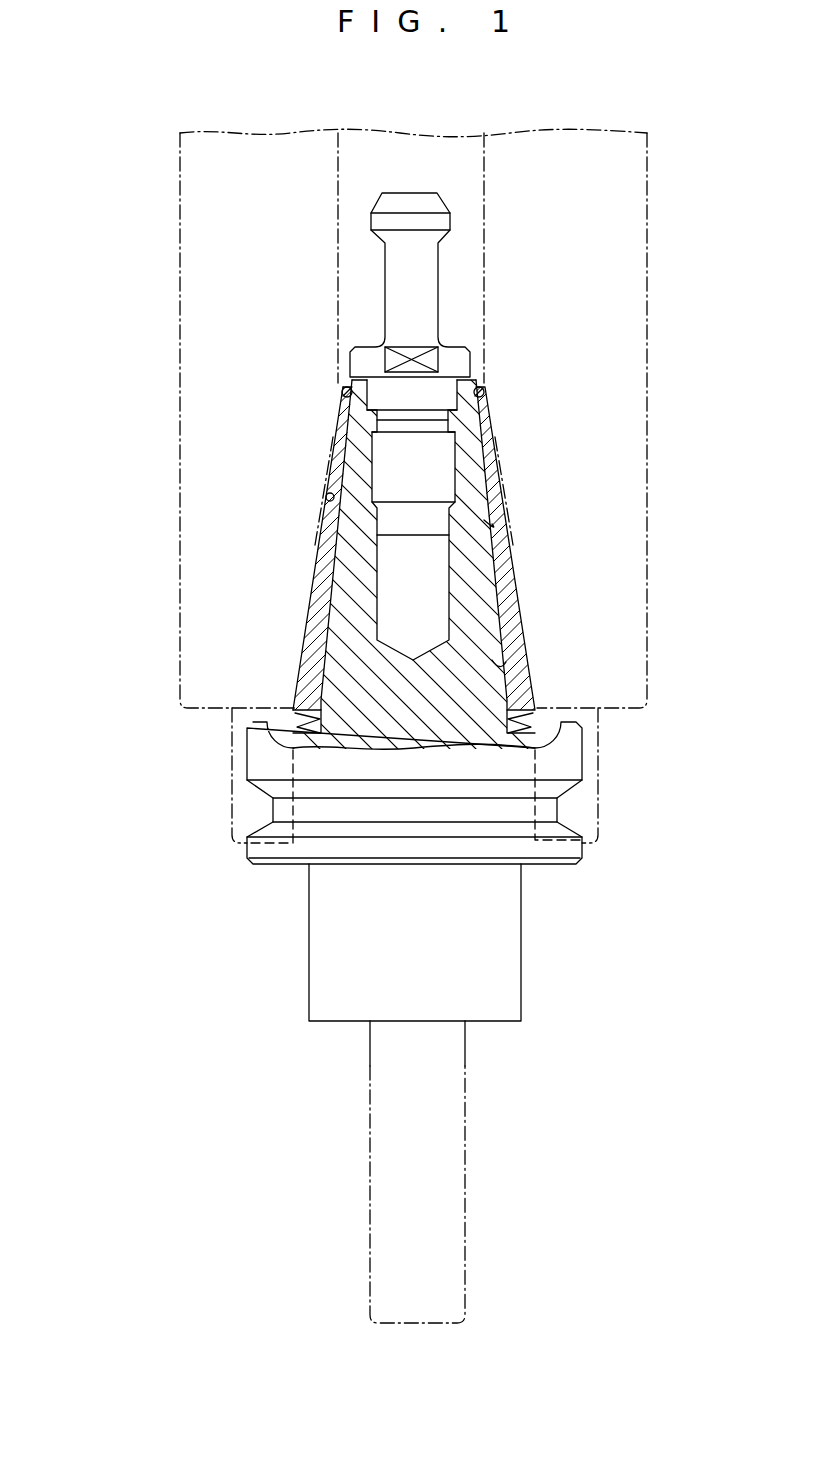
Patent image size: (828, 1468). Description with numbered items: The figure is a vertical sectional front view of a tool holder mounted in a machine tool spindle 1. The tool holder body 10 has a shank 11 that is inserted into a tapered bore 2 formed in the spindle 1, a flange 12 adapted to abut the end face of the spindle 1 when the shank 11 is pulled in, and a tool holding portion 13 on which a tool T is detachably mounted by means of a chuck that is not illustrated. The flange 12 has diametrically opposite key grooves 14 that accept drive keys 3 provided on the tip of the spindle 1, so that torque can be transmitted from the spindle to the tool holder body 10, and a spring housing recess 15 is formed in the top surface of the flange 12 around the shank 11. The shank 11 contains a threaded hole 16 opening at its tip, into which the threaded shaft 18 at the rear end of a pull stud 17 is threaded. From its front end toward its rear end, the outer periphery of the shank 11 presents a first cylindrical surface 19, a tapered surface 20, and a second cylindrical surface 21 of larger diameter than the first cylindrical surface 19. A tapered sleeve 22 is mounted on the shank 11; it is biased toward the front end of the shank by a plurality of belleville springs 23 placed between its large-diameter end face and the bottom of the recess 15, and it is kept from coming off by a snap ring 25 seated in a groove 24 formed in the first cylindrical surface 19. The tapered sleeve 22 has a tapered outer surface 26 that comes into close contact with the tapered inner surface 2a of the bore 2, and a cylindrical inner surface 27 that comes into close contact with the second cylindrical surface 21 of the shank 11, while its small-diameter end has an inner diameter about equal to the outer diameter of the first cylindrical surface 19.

The spindle 1 is at (188, 273).
The tapered bore 2 is at (326, 501).
The tapered inner surface 2a is at (490, 527).
The drive keys 3 is at (595, 764).
The tool holder body 10 is at (239, 761).
The shank 11 is at (350, 592).
The flange 12 is at (248, 850).
The tool holding portion 13 is at (330, 913).
The key grooves 14 is at (570, 820).
The spring housing recess 15 is at (297, 705).
The threaded hole 16 is at (446, 470).
The pull stud 17 is at (430, 275).
The threaded shaft 18 is at (435, 450).
The first cylindrical surface 19 is at (350, 440).
The tapered surface 20 is at (327, 542).
The second cylindrical surface 21 is at (302, 645).
The tapered sleeve 22 is at (525, 613).
The belleville springs 23 is at (537, 737).
The groove 24 is at (484, 388).
The snap ring 25 is at (343, 390).
The tapered outer surface 26 is at (517, 577).
The cylindrical inner surface 27 is at (492, 663).
The tool T is at (376, 1150).